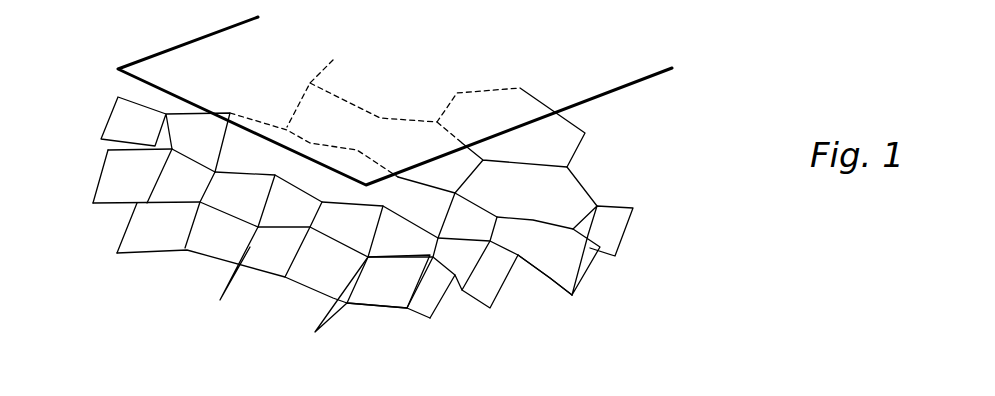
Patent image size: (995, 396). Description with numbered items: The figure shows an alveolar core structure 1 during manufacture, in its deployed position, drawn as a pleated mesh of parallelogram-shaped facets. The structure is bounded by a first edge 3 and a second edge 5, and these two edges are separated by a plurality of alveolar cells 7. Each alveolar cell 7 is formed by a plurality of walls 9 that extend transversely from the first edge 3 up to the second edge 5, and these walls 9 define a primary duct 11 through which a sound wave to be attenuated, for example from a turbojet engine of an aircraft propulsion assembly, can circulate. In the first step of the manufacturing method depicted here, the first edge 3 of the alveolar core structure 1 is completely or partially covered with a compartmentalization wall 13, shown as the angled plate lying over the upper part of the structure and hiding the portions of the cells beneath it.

The alveolar core structure 1 is at (652, 182).
The first edge 3 is at (582, 187).
The second edge 5 is at (537, 278).
The alveolar cell 7 is at (300, 265).
The wall 9 is at (330, 268).
The primary duct 11 is at (383, 248).
The compartmentalization wall 13 is at (182, 52).